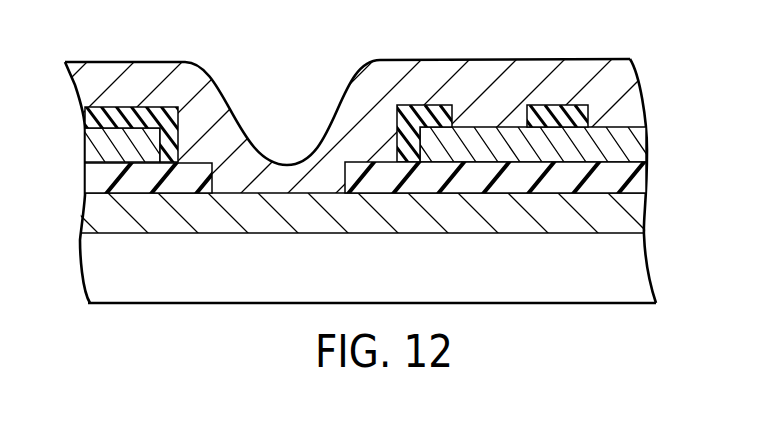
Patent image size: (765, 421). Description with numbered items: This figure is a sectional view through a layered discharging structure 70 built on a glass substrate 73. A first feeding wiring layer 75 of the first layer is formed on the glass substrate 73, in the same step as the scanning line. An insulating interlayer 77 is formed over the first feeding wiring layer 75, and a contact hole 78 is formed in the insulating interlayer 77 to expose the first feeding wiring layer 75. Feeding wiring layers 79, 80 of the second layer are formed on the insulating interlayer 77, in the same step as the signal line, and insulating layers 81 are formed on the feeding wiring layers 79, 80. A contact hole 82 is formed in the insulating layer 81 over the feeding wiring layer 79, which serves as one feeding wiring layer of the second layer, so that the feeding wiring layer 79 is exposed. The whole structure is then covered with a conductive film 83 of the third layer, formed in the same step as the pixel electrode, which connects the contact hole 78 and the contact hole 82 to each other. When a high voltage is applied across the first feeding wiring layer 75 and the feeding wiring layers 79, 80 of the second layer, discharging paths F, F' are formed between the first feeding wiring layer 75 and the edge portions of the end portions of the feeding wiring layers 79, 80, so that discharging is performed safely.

The liquid crystal display substrate assembly 70 is at (651, 268).
The glass substrate 73 is at (542, 287).
The first feeding wiring layer 75 is at (625, 212).
The insulating interlayer 77 is at (97, 180).
The contact hole 78 is at (328, 91).
The feeding wiring layer 79 is at (630, 142).
The feeding wiring layer 80 is at (97, 150).
The insulating layer 81 is at (88, 118).
The contact hole 82 is at (545, 46).
The conductive film 83 is at (605, 58).
The discharging path F is at (419, 224).
The discharging path F' is at (186, 224).